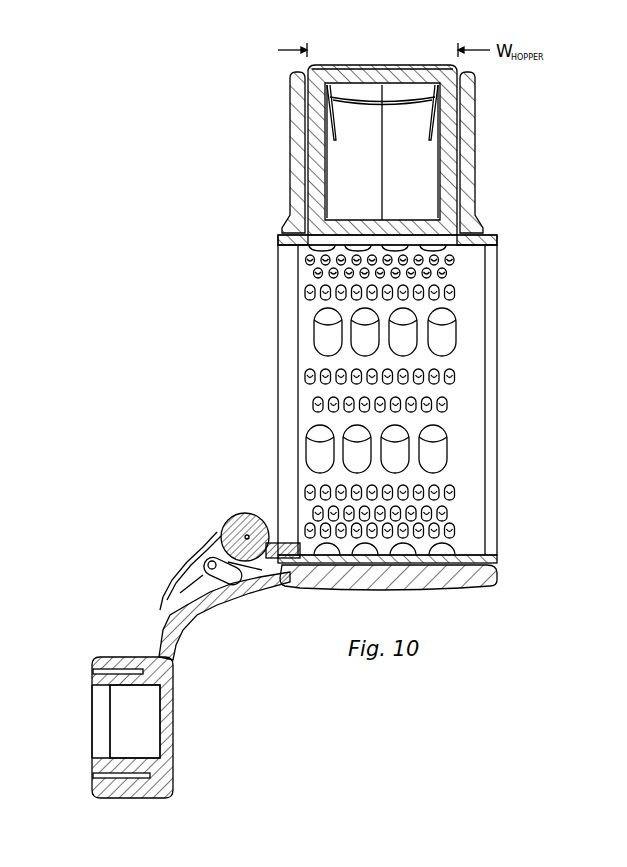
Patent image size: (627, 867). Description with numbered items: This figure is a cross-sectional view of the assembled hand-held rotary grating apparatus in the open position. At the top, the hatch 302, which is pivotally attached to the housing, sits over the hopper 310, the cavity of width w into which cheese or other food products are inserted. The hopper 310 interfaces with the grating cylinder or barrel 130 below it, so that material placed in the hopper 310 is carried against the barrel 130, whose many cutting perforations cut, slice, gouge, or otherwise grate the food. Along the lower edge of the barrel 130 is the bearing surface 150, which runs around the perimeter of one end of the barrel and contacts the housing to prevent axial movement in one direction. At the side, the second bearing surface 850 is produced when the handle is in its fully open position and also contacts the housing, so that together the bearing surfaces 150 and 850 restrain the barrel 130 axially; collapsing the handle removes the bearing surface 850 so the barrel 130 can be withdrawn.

The hatch 302 is at (448, 207).
The hopper 310 is at (462, 222).
The grating cylinder 130 is at (470, 432).
The bearing surface 150 is at (477, 577).
The second bearing surface 850 is at (288, 578).